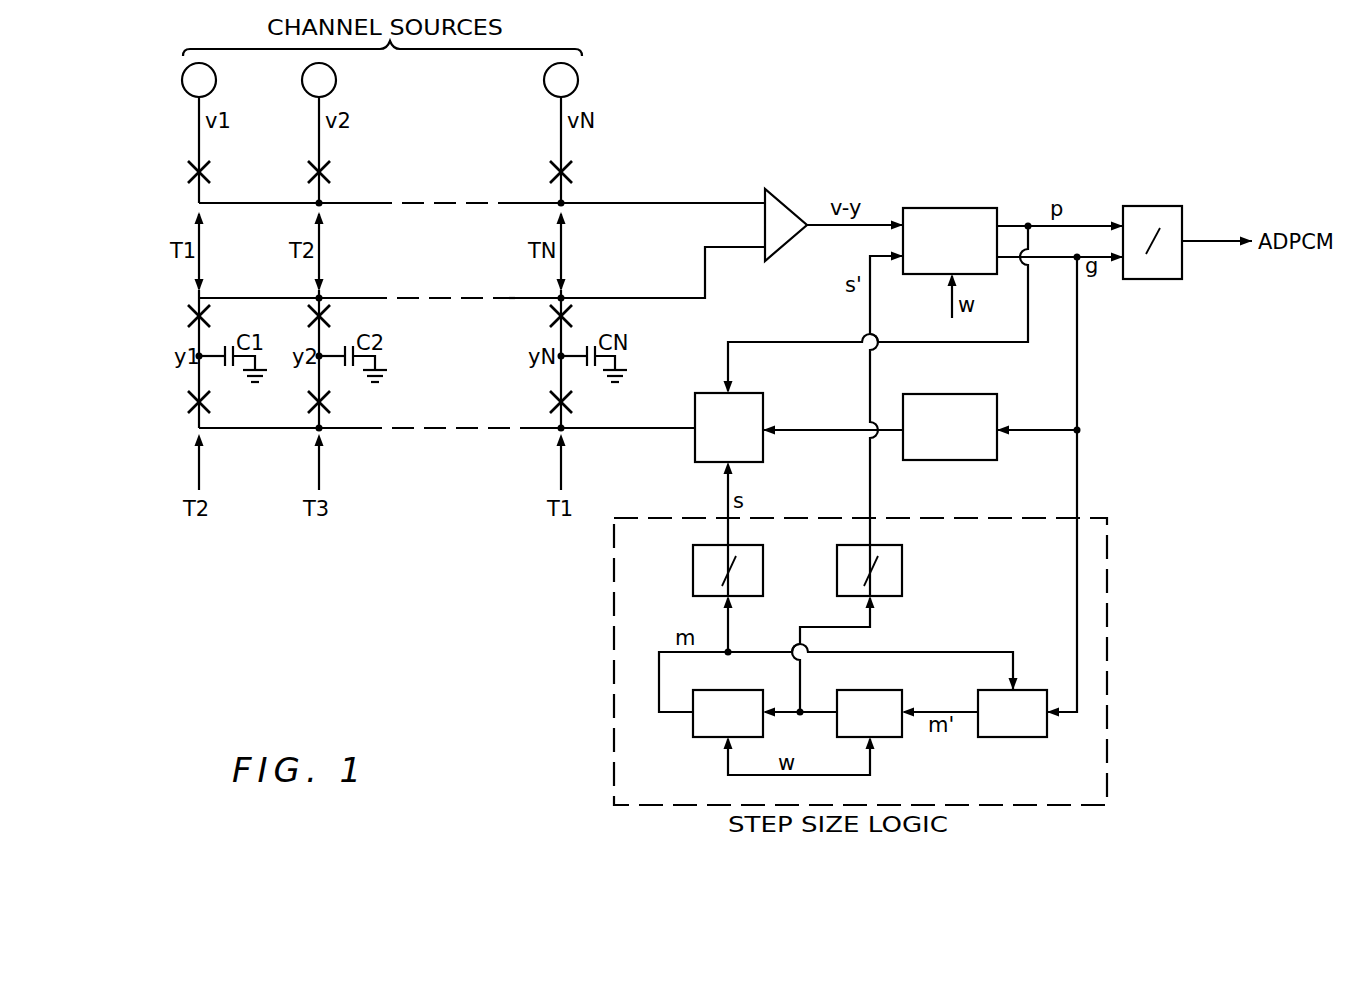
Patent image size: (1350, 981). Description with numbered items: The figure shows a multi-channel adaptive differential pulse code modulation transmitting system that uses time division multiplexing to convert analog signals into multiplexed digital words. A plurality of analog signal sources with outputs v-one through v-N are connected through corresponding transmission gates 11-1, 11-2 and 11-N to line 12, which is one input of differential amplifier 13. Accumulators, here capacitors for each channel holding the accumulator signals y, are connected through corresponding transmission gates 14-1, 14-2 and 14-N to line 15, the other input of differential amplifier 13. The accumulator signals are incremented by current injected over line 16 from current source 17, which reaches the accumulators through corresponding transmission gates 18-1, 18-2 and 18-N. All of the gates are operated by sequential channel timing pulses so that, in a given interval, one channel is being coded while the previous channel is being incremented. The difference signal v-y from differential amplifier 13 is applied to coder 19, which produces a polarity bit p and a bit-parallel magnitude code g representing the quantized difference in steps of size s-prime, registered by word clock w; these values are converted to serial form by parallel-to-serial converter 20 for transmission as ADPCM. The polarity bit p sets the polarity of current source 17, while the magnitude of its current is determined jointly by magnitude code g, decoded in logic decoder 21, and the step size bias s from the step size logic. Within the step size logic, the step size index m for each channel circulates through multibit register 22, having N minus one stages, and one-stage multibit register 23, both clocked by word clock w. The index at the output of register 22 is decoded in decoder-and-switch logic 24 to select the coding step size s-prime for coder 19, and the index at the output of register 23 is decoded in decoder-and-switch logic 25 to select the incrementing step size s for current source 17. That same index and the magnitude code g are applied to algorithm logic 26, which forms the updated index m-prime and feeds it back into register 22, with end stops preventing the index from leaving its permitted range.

The transmission gate 11-1 is at (209, 167).
The transmission gate 11-2 is at (329, 171).
The transmission gate 11-N is at (571, 170).
The line 12 is at (665, 203).
The differential amplifier 13 is at (783, 207).
The transmission gate 14-1 is at (210, 316).
The transmission gate 14-2 is at (330, 318).
The transmission gate 14-N is at (572, 318).
The line 15 is at (632, 298).
The line 16 is at (598, 430).
The current source 17 is at (765, 412).
The transmission gate 18-1 is at (210, 404).
The transmission gate 18-2 is at (330, 404).
The transmission gate 18-N is at (572, 404).
The coder 19 is at (920, 215).
The parallel-to-serial converter 20 is at (1135, 215).
The logic decoder 21 is at (988, 455).
The multibit register 22 is at (878, 690).
The multibit register 23 is at (700, 737).
The decoder-and-switch logic 24 is at (904, 572).
The decoder-and-switch logic 25 is at (765, 570).
The algorithm logic 26 is at (1035, 737).